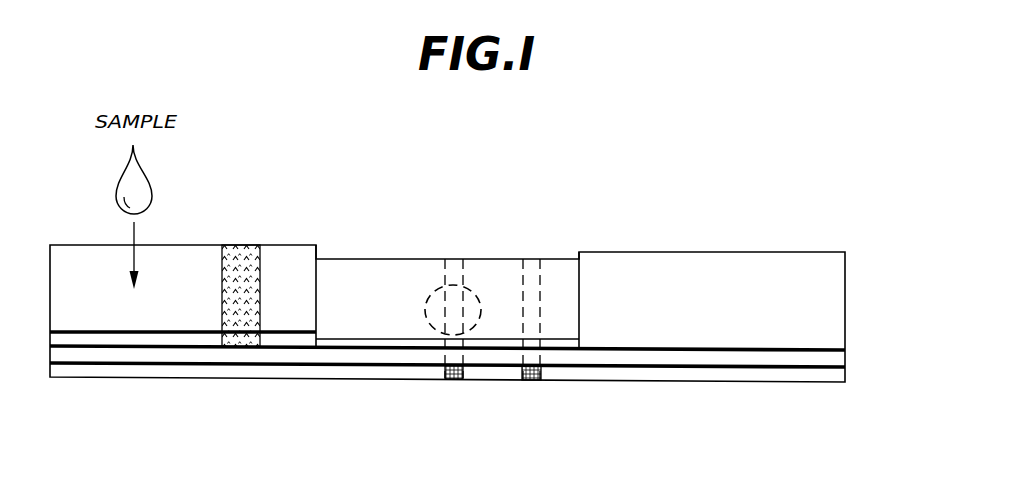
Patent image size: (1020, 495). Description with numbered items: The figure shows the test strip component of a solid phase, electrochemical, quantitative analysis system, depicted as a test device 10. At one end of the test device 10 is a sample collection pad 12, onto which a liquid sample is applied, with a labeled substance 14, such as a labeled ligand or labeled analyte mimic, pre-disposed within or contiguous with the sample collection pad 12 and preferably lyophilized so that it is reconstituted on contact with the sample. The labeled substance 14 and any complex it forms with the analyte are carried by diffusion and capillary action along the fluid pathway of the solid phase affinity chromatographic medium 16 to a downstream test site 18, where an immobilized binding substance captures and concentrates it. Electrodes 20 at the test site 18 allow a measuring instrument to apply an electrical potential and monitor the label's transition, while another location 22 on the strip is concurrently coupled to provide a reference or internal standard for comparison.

The test device 10 is at (692, 208).
The sample collection pad 12 is at (167, 262).
The labeled substance 14 is at (248, 258).
The solid phase affinity chromatographic medium 16 is at (498, 272).
The test site 18 is at (436, 282).
The electrodes 20 is at (455, 382).
The another location 22 is at (530, 382).